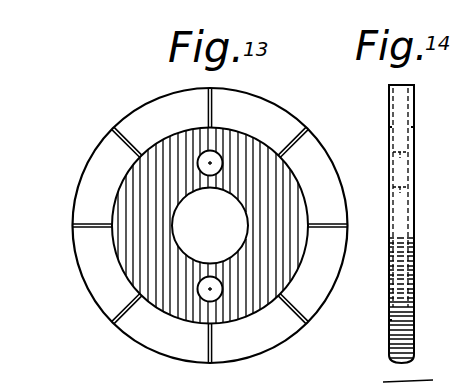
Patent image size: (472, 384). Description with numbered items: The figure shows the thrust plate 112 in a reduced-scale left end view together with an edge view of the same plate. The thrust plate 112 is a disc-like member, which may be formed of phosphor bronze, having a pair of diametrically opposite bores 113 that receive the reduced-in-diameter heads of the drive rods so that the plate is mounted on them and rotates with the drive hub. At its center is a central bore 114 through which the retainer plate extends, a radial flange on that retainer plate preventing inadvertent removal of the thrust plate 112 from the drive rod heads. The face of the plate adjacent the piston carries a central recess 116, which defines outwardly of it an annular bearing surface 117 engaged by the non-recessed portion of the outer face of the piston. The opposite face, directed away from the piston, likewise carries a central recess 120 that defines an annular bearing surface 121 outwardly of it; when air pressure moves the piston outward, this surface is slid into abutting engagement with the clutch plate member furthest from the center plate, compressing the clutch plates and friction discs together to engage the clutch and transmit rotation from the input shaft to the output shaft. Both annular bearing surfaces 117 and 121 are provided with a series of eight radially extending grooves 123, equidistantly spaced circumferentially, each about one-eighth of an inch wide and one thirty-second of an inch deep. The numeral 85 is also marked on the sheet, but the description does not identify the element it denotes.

In FIG. 14, the pin 85 is at (458, 221).
In FIG. 13, the thrust plate 112 is at (332, 143).
In FIG. 14, the thrust plate 112 is at (423, 346).
In FIG. 13, the bores 113 is at (210, 161).
In FIG. 14, the bores 113 is at (400, 160).
In FIG. 13, the central bore 114 is at (172, 224).
In FIG. 14, the central bore 114 is at (400, 205).
In FIG. 14, the central recess 116 is at (392, 320).
In FIG. 14, the annular bearing surface 117 is at (389, 97).
In FIG. 13, the central recess 120 is at (290, 277).
In FIG. 14, the central recess 120 is at (414, 313).
In FIG. 13, the annular bearing surface 121 is at (288, 125).
In FIG. 14, the annular bearing surface 121 is at (414, 93).
In FIG. 13, the radially extending grooves 123 is at (207, 103).
In FIG. 14, the radially extending grooves 123 is at (393, 110).